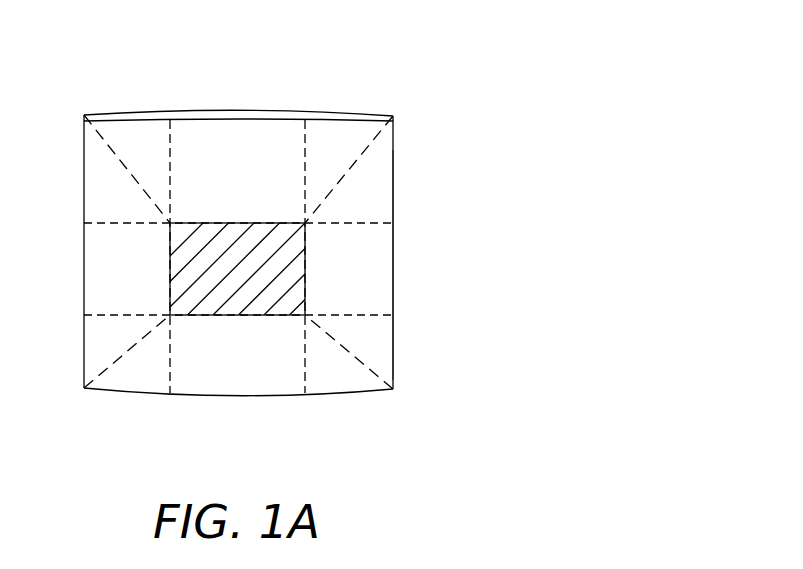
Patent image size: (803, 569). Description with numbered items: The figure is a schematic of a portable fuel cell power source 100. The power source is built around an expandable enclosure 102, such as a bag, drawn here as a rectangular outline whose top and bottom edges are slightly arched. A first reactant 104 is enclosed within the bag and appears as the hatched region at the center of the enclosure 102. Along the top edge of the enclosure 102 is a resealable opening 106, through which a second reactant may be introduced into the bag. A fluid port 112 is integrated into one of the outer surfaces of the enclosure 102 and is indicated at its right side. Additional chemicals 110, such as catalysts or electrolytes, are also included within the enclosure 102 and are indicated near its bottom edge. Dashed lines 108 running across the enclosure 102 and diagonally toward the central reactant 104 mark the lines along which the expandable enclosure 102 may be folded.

The portable fuel cell power source 100 is at (510, 50).
The expandable enclosure 102 is at (393, 143).
The first reactant 104 is at (297, 268).
The resealable opening 106 is at (247, 112).
The lines 108 is at (364, 364).
The additional chemicals 110 is at (245, 397).
The fluid port 112 is at (380, 190).